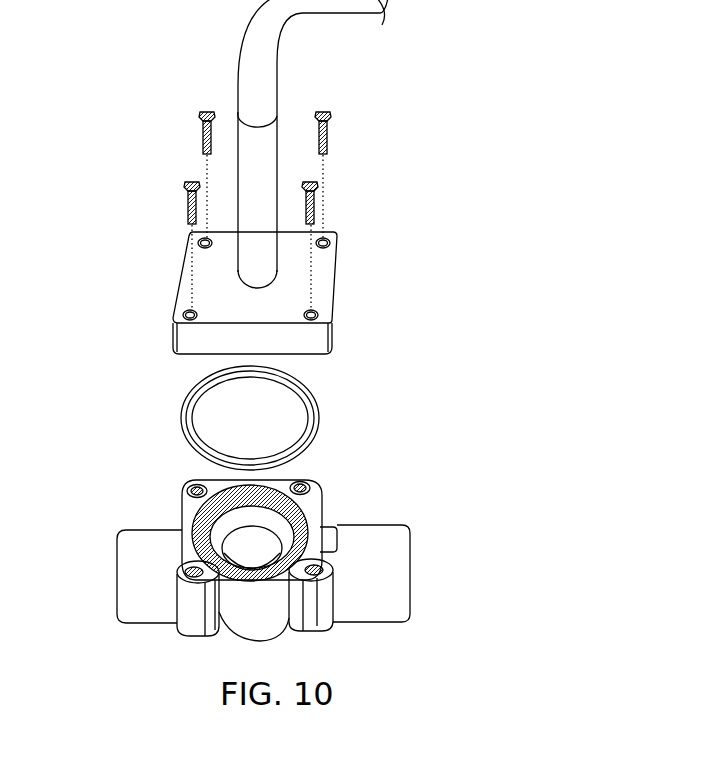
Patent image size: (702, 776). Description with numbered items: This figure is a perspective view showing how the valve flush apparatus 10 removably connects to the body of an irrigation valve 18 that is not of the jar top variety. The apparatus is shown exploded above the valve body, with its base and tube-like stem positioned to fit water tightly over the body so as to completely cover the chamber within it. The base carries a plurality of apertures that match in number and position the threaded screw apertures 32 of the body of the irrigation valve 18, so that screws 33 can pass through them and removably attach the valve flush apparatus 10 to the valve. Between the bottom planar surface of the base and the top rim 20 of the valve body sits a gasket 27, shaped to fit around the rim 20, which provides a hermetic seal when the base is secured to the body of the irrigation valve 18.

The valve flush apparatus 10 is at (257, 320).
The screws 33 is at (205, 112).
The gasket 27 is at (307, 403).
The threaded screw apertures 32 is at (197, 490).
The top rim 20 is at (247, 517).
The irrigation valve 18 is at (146, 561).